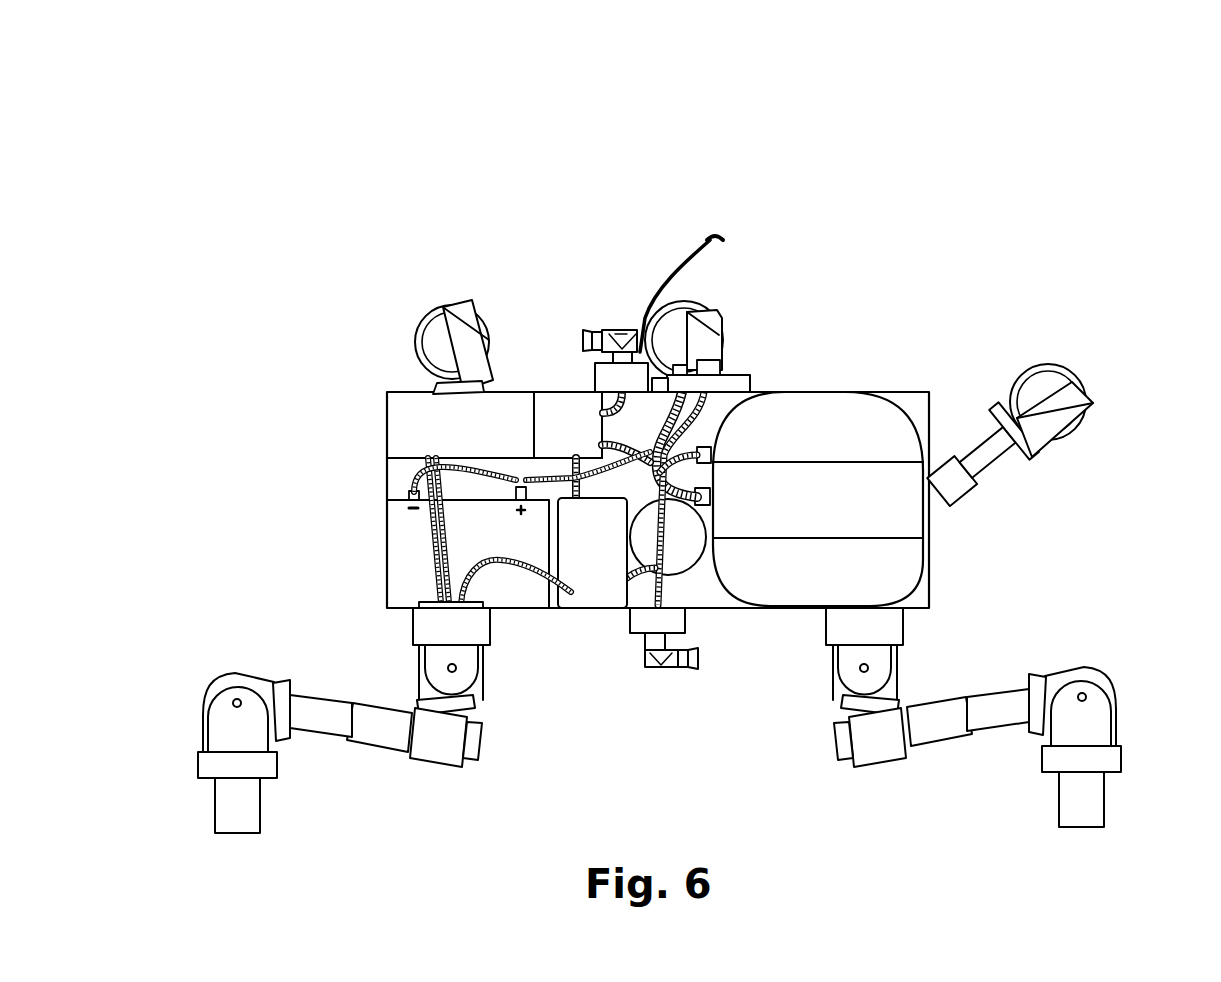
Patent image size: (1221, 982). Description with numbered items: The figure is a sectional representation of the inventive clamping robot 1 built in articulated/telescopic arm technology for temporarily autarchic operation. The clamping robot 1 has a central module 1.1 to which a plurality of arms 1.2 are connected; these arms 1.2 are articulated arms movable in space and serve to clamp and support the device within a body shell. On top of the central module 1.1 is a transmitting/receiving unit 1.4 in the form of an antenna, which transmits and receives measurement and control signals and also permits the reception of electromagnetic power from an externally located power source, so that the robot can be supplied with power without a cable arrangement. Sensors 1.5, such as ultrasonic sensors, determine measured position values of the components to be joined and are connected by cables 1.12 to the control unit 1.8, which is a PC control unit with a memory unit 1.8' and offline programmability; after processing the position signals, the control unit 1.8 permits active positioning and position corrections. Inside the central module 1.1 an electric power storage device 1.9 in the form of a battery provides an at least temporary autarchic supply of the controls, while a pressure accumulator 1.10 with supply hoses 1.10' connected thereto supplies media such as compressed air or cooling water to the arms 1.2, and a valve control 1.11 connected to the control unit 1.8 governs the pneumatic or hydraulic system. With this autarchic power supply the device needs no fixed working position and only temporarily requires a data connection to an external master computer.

The clamping robot 1 is at (838, 340).
The central module 1.1 is at (933, 573).
The arms 1.2 is at (985, 663).
The transmitting/receiving unit 1.4 is at (707, 240).
The sensors 1.5 is at (603, 318).
The control unit 1.8 is at (408, 379).
The memory unit 1.8' is at (520, 352).
The electric power storage device 1.9 is at (386, 497).
The pressure accumulator 1.10 is at (1029, 356).
The supply hoses 1.10' is at (483, 720).
The valve control 1.11 is at (549, 560).
The cables 1.12 is at (663, 588).